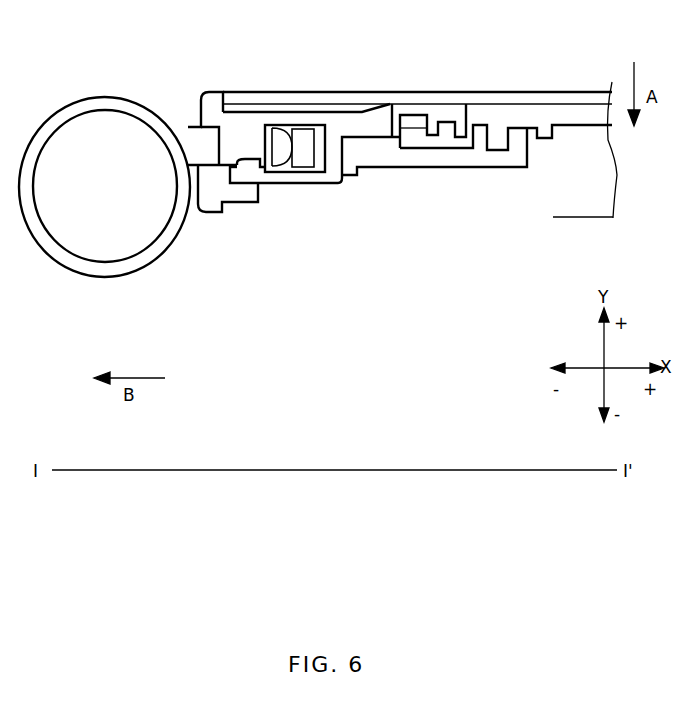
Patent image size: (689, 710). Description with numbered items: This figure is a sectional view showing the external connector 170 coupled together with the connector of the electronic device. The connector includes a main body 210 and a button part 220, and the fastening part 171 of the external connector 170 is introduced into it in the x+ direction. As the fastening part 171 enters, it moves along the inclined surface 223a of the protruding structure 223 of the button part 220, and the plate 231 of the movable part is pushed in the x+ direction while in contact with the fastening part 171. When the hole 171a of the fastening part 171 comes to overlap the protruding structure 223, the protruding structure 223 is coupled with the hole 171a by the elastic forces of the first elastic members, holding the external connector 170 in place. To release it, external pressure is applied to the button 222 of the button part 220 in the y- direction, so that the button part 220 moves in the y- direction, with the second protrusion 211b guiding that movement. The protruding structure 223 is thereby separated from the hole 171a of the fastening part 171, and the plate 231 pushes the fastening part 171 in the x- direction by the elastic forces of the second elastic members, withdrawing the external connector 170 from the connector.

The external connector 170 is at (107, 270).
The fastening part 171 is at (204, 160).
The hole 171a is at (224, 145).
The main body 210 is at (518, 195).
The second protrusion 211b is at (413, 140).
The button part 220 is at (327, 185).
The button 222 is at (408, 113).
The protruding structure 223 is at (248, 170).
The inclined surface 223a is at (236, 180).
The plate 231 is at (299, 128).